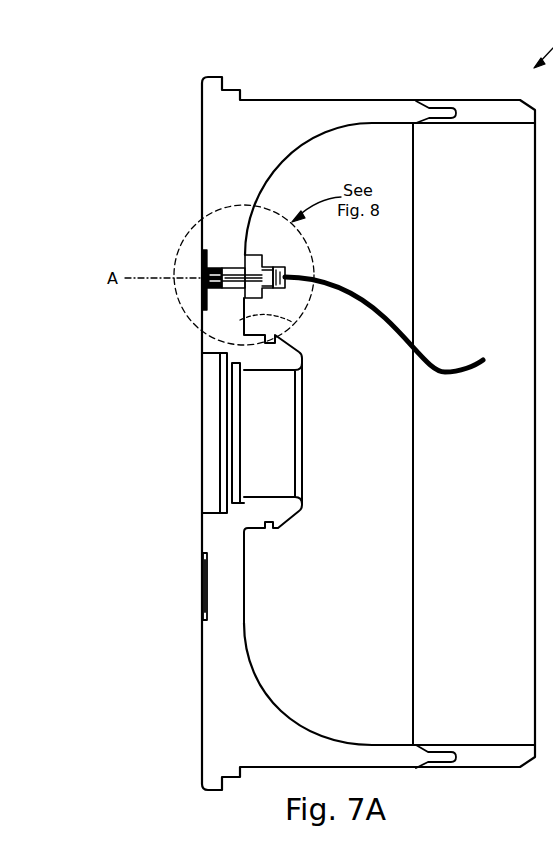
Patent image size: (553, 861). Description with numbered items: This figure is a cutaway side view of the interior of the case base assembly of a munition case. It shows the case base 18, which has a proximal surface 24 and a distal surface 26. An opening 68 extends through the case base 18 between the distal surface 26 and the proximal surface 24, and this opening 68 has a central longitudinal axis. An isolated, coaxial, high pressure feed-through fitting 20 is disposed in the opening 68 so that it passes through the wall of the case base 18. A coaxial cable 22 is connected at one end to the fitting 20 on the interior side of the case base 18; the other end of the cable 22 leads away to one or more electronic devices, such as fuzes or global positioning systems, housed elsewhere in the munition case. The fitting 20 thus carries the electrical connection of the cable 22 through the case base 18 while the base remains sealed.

The case base 18 is at (263, 106).
The feed-through fitting 20 is at (260, 203).
The coaxial cable 22 is at (444, 369).
The proximal surface 24 is at (293, 322).
The distal surface 26 is at (199, 232).
The opening 68 is at (234, 262).